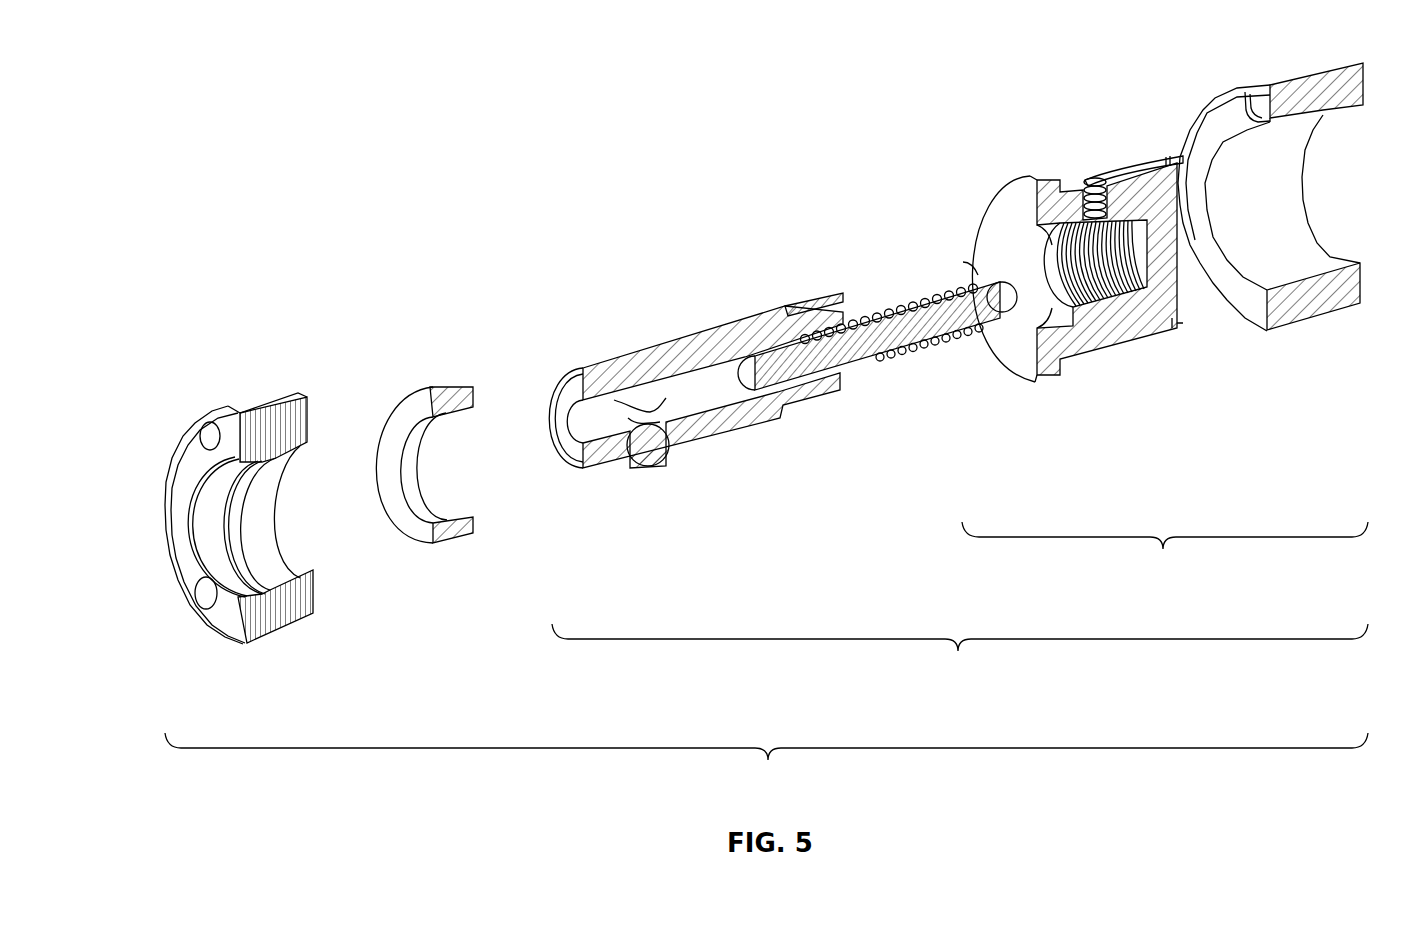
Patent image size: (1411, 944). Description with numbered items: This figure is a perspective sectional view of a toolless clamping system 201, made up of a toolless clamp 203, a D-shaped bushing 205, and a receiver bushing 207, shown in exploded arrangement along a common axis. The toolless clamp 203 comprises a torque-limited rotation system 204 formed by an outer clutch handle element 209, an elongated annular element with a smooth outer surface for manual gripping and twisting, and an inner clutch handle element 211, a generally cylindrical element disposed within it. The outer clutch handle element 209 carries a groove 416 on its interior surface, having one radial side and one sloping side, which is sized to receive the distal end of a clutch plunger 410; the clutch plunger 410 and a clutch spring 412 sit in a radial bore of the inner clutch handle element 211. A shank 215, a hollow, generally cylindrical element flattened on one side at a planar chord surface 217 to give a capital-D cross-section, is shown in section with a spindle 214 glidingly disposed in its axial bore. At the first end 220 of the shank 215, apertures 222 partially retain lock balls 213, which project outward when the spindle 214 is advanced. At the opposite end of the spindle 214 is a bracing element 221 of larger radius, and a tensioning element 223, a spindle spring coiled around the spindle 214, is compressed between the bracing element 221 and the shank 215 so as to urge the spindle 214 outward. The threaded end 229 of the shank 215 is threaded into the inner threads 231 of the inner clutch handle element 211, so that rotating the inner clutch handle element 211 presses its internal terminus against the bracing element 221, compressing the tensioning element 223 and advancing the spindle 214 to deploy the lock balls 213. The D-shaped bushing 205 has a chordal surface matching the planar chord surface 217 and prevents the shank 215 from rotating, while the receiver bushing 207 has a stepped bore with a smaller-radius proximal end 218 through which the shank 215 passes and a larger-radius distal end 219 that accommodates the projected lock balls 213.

The toolless clamping system 201 is at (766, 765).
The toolless clamp 203 is at (960, 656).
The torque-limited rotation system 204 is at (1165, 554).
The D-shaped bushing 205 is at (453, 538).
The receiver bushing 207 is at (233, 637).
The outer clutch handle element 209 is at (1307, 320).
The inner clutch handle element 211 is at (1043, 363).
The lock ball 213 is at (660, 457).
The spindle 214 is at (867, 363).
The shank 215 is at (718, 440).
The planar chord surface 217 is at (608, 360).
The proximal end of receiver bushing bore 218 is at (262, 527).
The distal end of receiver bushing bore 219 is at (222, 550).
The first end of shank 220 is at (565, 397).
The bracing element 221 is at (1000, 260).
The aperture 222 is at (645, 397).
The tensioning element 223 is at (897, 303).
The threaded end of shank 229 is at (812, 303).
The inner threads 231 is at (1117, 297).
The clutch plunger 410 is at (1130, 160).
The clutch spring 412 is at (1090, 177).
The groove 416 is at (1246, 95).